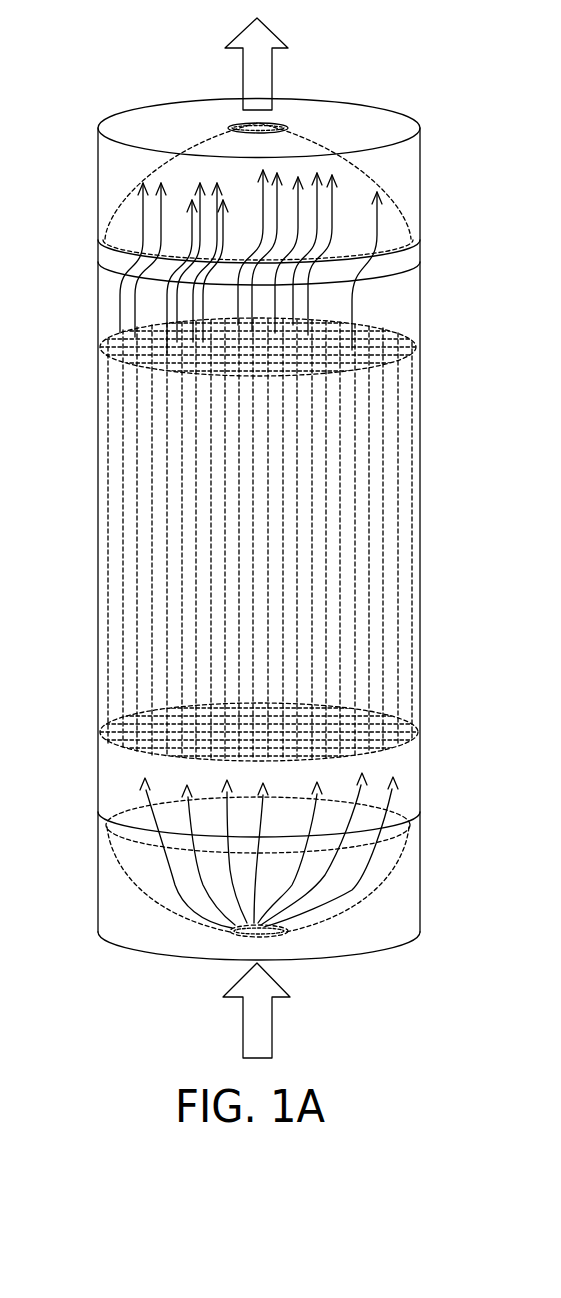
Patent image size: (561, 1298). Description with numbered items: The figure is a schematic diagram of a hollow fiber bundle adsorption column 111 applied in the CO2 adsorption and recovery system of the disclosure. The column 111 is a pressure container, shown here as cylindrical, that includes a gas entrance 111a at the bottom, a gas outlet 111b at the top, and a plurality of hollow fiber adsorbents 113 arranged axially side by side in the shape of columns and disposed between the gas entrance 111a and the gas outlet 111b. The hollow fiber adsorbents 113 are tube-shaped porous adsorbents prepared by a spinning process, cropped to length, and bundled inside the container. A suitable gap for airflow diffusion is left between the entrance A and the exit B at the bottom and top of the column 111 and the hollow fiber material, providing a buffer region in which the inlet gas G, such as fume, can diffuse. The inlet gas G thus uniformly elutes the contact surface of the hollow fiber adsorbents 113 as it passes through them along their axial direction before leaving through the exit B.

The hollow fiber bundle adsorption column 111 is at (98, 593).
The gas entrance 111a is at (335, 940).
The gas outlet 111b is at (343, 117).
The hollow fiber adsorbents 113 is at (400, 582).
The entrance A is at (230, 940).
The exit B is at (275, 125).
The inlet gas G is at (259, 1010).